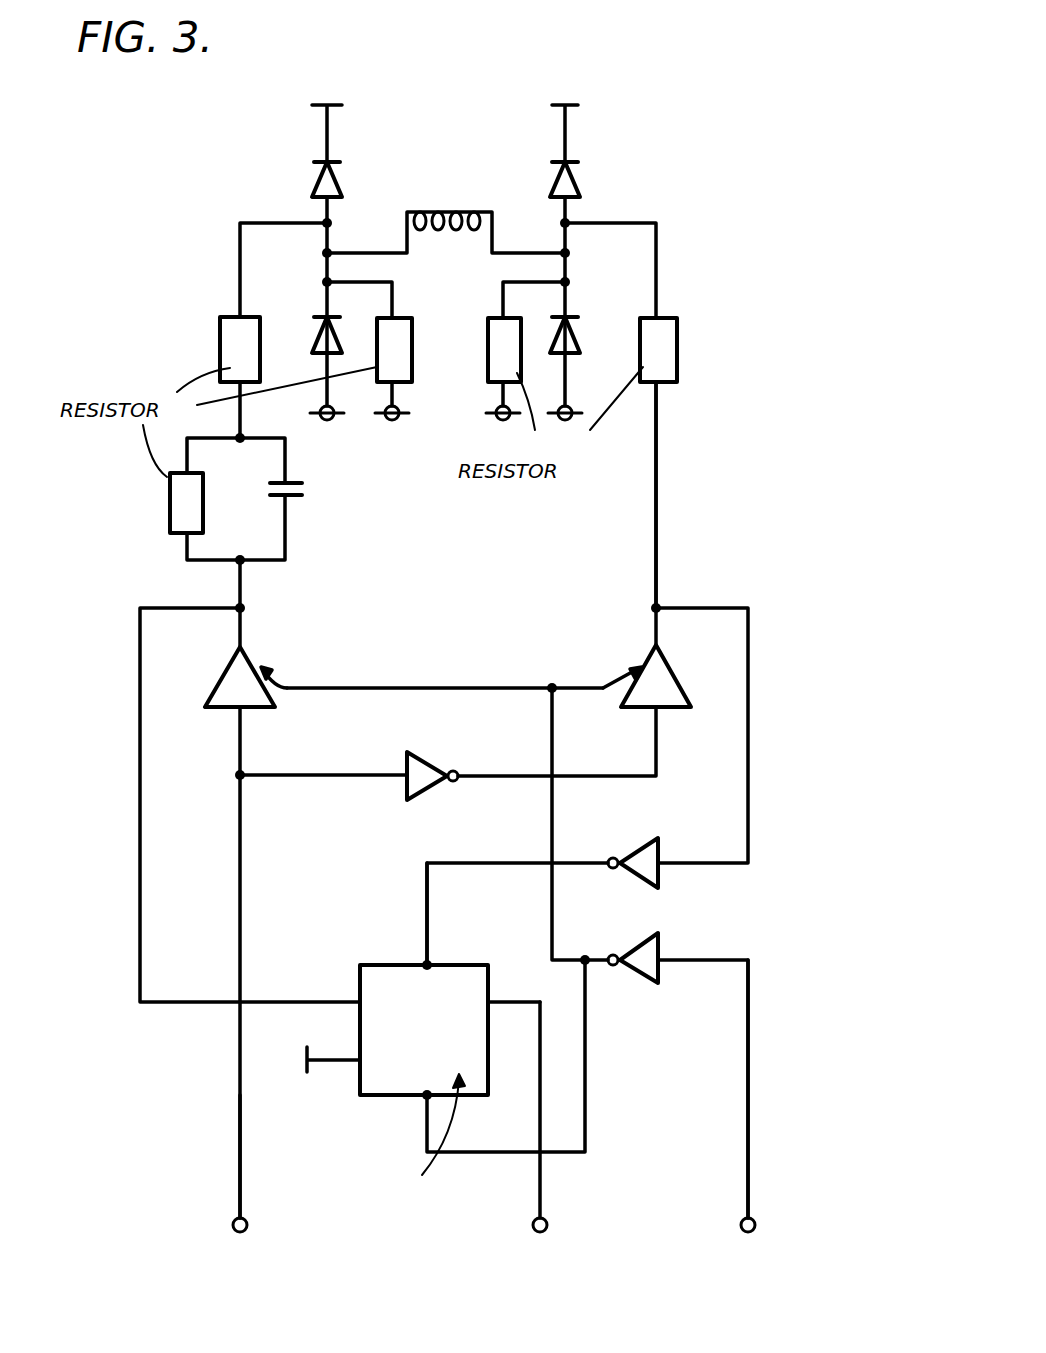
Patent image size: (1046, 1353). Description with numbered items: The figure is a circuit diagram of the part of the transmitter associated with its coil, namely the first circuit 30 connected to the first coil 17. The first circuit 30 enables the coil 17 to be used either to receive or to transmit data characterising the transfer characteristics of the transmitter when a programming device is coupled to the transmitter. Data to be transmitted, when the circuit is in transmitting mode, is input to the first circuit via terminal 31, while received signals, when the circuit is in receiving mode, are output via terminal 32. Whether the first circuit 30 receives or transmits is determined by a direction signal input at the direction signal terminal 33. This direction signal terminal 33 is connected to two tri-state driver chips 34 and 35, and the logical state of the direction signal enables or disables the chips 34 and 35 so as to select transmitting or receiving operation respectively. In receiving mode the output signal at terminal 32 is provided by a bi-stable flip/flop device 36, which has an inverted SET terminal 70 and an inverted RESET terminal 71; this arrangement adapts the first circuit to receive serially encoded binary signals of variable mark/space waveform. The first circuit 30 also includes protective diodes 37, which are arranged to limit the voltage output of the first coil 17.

The first coil 17 is at (440, 212).
The first circuit 30 is at (733, 378).
The terminal 31 is at (231, 1184).
The terminal 32 is at (537, 1137).
The direction signal terminal 33 is at (739, 1117).
The tri-state driver chip 34 is at (237, 665).
The tri-state driver chip 35 is at (655, 670).
The bi-stable flip/flop device 36 is at (413, 1111).
The protective diodes 37 is at (320, 340).
The inverted SET terminal 70 is at (426, 1097).
The inverted RESET terminal 71 is at (426, 963).